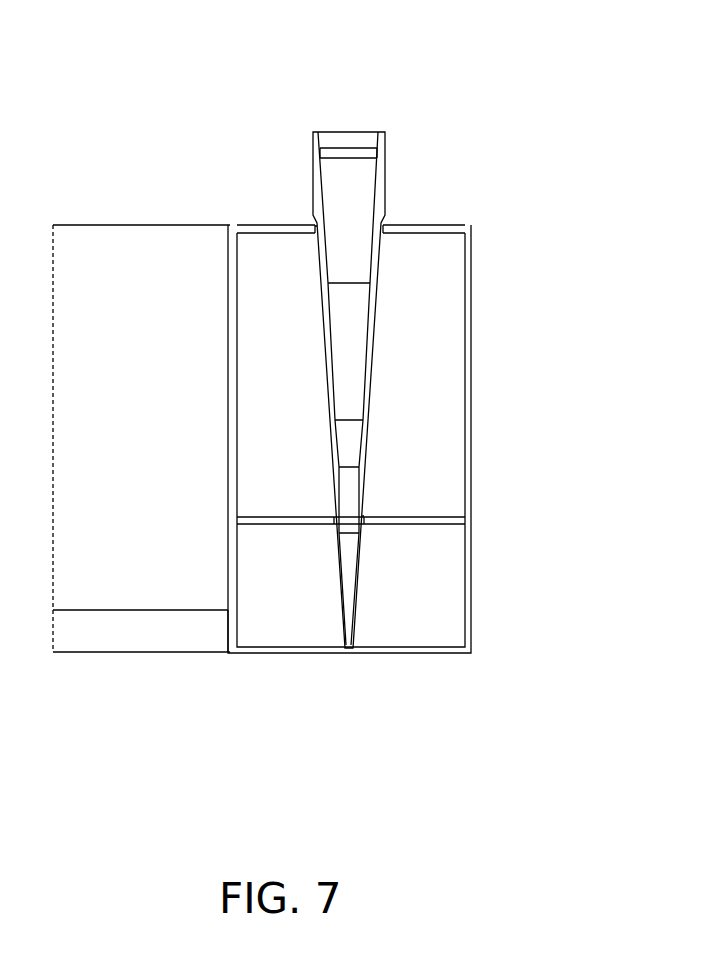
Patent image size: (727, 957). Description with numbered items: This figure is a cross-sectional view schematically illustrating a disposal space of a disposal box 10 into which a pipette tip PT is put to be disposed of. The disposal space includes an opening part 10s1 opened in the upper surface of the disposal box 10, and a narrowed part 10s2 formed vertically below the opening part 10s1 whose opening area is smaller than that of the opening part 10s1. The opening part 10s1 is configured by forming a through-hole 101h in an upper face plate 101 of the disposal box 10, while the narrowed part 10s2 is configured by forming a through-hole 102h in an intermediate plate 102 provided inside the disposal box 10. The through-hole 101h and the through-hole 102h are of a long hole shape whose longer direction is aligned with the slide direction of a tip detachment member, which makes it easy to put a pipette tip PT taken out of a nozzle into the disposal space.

The pipette tip PT is at (348, 130).
The disposal box 10 is at (472, 290).
The upper face plate 101 is at (445, 223).
The through-hole 101h is at (388, 222).
The opening part 10s1 is at (313, 225).
The intermediate plate 102 is at (288, 525).
The through-hole 102h is at (364, 527).
The narrowed part 10s2 is at (363, 515).